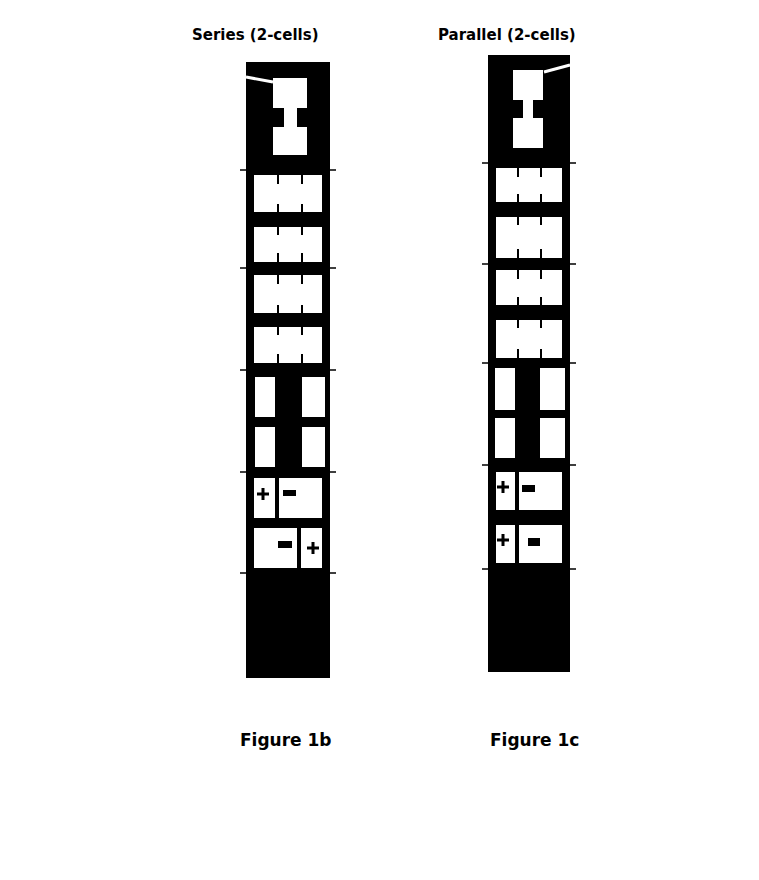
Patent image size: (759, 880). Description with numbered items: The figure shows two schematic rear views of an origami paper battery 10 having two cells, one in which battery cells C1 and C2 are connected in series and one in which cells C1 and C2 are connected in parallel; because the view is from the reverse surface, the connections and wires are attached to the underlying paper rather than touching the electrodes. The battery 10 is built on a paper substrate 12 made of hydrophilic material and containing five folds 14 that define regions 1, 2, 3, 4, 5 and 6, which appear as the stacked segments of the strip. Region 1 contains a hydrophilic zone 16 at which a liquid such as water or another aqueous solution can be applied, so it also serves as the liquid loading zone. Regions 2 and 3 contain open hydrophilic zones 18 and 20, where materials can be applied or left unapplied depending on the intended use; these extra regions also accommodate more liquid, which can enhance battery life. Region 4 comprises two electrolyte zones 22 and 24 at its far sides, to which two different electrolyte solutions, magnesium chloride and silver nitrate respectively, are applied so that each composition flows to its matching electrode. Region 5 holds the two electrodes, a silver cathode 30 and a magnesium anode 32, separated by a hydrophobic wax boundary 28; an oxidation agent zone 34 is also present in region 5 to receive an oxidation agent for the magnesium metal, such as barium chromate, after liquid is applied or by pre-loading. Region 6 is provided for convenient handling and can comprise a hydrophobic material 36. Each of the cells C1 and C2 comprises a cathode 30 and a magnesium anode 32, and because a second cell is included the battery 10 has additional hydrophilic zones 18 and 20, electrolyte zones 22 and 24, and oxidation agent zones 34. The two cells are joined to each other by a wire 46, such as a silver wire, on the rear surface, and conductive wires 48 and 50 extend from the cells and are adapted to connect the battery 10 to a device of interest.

In FIG. 1B, the region 1 is at (264, 116).
In FIG. 1C, the region 1 is at (500, 109).
In FIG. 1B, the region 2 is at (273, 218).
In FIG. 1C, the region 2 is at (510, 213).
In FIG. 1B, the region 3 is at (273, 319).
In FIG. 1C, the region 3 is at (510, 314).
In FIG. 1B, the region 4 is at (274, 422).
In FIG. 1C, the region 4 is at (511, 413).
In FIG. 1B, the region 5 is at (274, 523).
In FIG. 1C, the region 5 is at (512, 517).
In FIG. 1B, the region 6 is at (277, 623).
In FIG. 1C, the region 6 is at (514, 617).
In FIG. 1B, the origami paper battery 10 is at (203, 159).
In FIG. 1C, the origami paper battery 10 is at (597, 159).
In FIG. 1B, the paper substrate 12 is at (333, 73).
In FIG. 1C, the paper substrate 12 is at (488, 71).
In FIG. 1B, the folds 14 is at (274, 370).
In FIG. 1C, the folds 14 is at (513, 365).
In FIG. 1B, the hydrophilic zone (liquid loading zone) 16 is at (242, 60).
In FIG. 1C, the hydrophilic zone (liquid loading zone) 16 is at (574, 54).
In FIG. 1B, the open hydrophilic zone 18 is at (314, 242).
In FIG. 1C, the open hydrophilic zone 18 is at (555, 232).
In FIG. 1B, the open hydrophilic zone 20 is at (314, 340).
In FIG. 1C, the open hydrophilic zone 20 is at (555, 332).
In FIG. 1B, the electrolyte zone 22 is at (257, 455).
In FIG. 1C, the electrolyte zone 22 is at (497, 447).
In FIG. 1B, the electrolyte zone 24 is at (314, 440).
In FIG. 1C, the electrolyte zone 24 is at (552, 430).
In FIG. 1B, the hydrophobic boundary 28 is at (277, 484).
In FIG. 1C, the hydrophobic boundary 28 is at (514, 530).
In FIG. 1B, the cathode 30 is at (262, 503).
In FIG. 1C, the cathode 30 is at (530, 490).
In FIG. 1B, the magnesium anode 32 is at (330, 490).
In FIG. 1C, the magnesium anode 32 is at (540, 546).
In FIG. 1B, the oxidation agent zone 34 is at (275, 541).
In FIG. 1C, the oxidation agent zone 34 is at (560, 527).
In FIG. 1B, the hydrophobic material 36 is at (246, 660).
In FIG. 1C, the hydrophobic material 36 is at (572, 665).
In FIG. 1B, the wire 46 is at (275, 513).
In FIG. 1C, the wire 46 is at (565, 573).
In FIG. 1B, the conductive wire 48 is at (300, 494).
In FIG. 1C, the conductive wire 48 is at (490, 497).
In FIG. 1B, the conductive wire 50 is at (328, 545).
In FIG. 1C, the conductive wire 50 is at (540, 490).
In FIG. 1B, the battery cell C1 is at (132, 470).
In FIG. 1C, the battery cell C1 is at (668, 465).
In FIG. 1B, the battery cell C2 is at (132, 527).
In FIG. 1C, the battery cell C2 is at (670, 520).